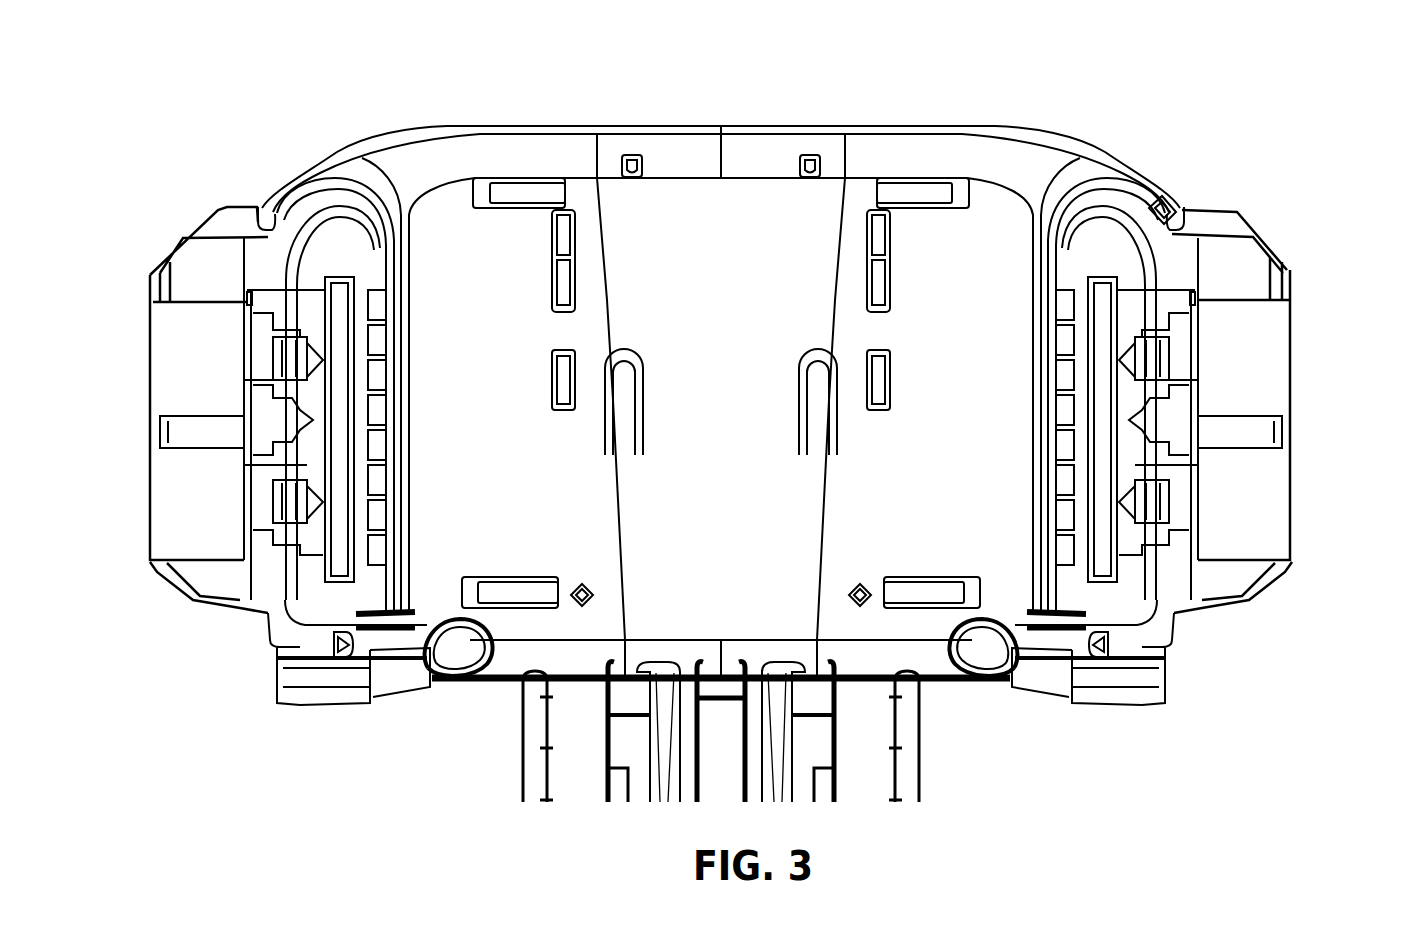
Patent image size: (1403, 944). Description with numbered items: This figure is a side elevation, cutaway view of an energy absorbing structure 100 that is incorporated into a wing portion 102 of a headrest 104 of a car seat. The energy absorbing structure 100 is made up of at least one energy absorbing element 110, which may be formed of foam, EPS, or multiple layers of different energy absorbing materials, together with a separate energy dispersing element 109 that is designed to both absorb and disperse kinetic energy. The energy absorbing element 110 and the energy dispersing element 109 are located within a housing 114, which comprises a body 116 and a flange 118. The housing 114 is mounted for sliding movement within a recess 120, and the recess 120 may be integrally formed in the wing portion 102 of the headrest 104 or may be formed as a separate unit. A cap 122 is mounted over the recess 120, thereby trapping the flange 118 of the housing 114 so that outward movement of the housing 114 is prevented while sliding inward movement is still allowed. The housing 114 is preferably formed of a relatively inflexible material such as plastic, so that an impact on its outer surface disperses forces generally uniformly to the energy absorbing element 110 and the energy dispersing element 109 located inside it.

The energy absorbing structure 100 is at (1208, 654).
The wing portion 102 is at (1078, 218).
The headrest 104 is at (950, 80).
The energy dispersing element 109 is at (1150, 570).
The energy absorbing element 110 is at (1083, 563).
The housing 114 is at (1244, 377).
The body 116 is at (1280, 246).
The flange 118 is at (1192, 207).
The recess 120 is at (1102, 205).
The cap 122 is at (1172, 200).